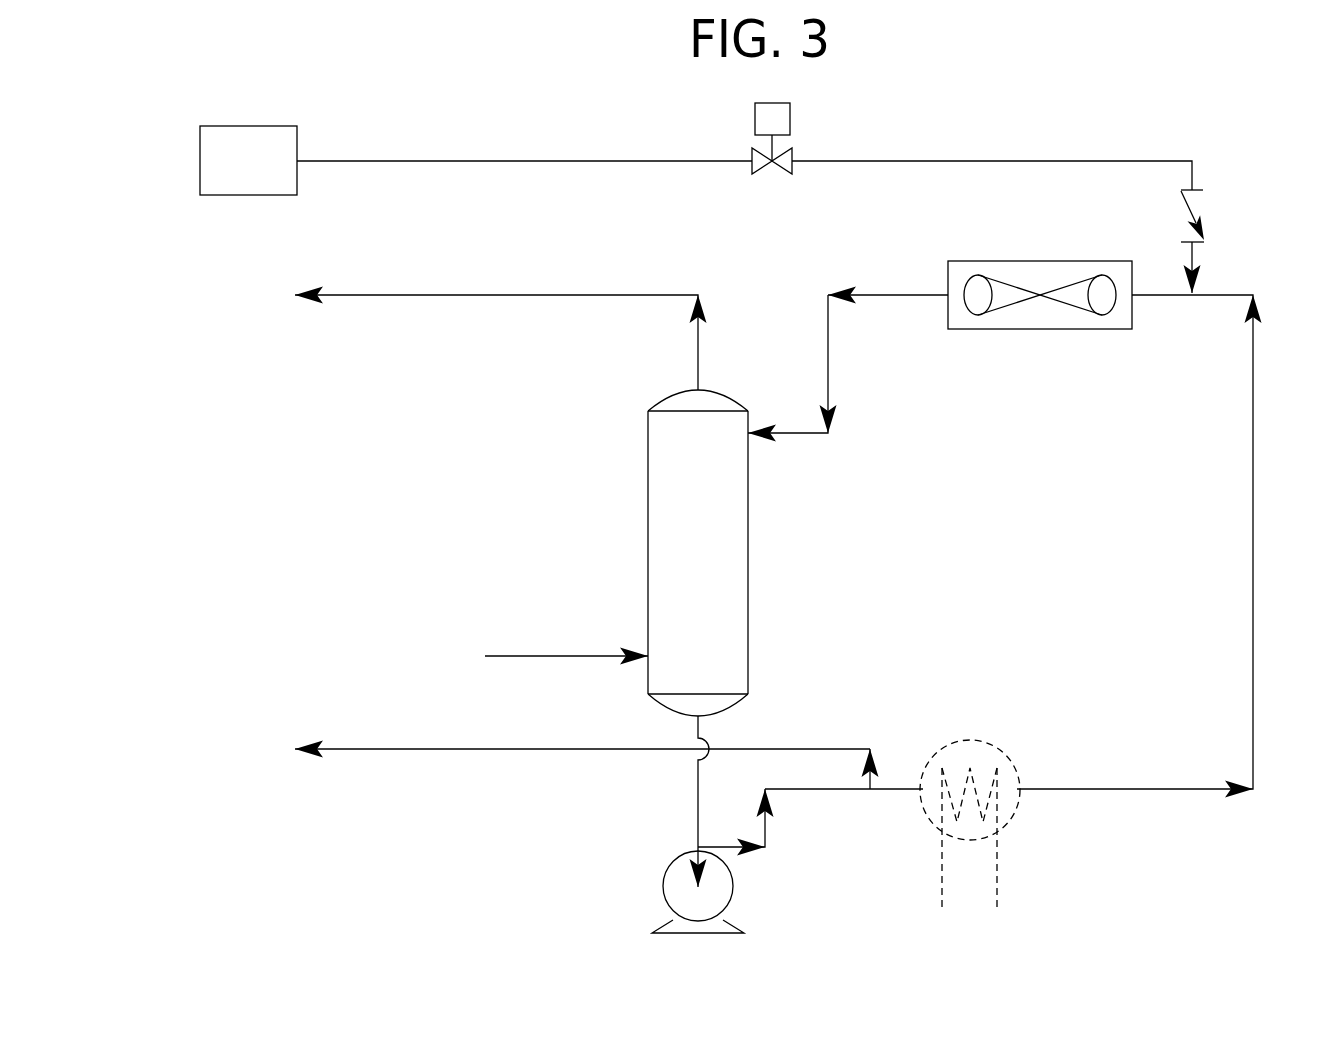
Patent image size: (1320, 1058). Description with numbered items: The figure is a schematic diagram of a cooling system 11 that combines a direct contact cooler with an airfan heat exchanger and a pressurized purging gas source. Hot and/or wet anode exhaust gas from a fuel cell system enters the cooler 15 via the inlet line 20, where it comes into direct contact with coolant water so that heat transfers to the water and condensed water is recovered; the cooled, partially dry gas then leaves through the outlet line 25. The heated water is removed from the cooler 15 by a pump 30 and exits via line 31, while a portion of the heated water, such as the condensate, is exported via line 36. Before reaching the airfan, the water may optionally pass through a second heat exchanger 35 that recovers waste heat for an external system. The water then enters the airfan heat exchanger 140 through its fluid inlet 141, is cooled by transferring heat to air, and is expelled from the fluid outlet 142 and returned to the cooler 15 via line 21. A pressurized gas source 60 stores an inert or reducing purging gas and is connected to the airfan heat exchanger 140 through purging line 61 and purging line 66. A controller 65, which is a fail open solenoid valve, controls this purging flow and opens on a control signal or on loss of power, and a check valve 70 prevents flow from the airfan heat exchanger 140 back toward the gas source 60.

The cooling system 11 is at (246, 398).
The cooler 15 is at (748, 549).
The inlet line 20 is at (553, 656).
The line 21 is at (828, 352).
The outlet line 25 is at (508, 295).
The pump 30 is at (733, 887).
The line 31 is at (822, 790).
The second heat exchanger 35 is at (966, 739).
The line 36 is at (465, 749).
The pressurized gas source 60 is at (200, 159).
The purging line 61 is at (508, 161).
The controller 65 is at (795, 157).
The purging line 66 is at (1122, 161).
The check valve 70 is at (1205, 199).
The airfan heat exchanger 140 is at (1040, 261).
The fluid inlet 141 is at (1134, 296).
The fluid outlet 142 is at (948, 290).